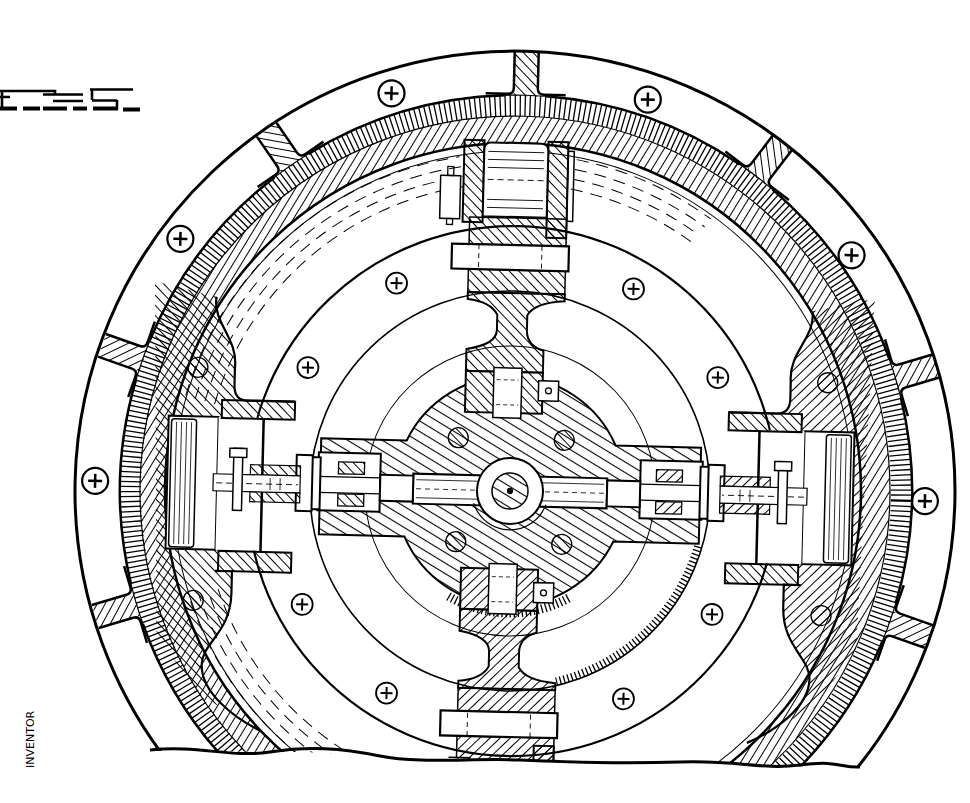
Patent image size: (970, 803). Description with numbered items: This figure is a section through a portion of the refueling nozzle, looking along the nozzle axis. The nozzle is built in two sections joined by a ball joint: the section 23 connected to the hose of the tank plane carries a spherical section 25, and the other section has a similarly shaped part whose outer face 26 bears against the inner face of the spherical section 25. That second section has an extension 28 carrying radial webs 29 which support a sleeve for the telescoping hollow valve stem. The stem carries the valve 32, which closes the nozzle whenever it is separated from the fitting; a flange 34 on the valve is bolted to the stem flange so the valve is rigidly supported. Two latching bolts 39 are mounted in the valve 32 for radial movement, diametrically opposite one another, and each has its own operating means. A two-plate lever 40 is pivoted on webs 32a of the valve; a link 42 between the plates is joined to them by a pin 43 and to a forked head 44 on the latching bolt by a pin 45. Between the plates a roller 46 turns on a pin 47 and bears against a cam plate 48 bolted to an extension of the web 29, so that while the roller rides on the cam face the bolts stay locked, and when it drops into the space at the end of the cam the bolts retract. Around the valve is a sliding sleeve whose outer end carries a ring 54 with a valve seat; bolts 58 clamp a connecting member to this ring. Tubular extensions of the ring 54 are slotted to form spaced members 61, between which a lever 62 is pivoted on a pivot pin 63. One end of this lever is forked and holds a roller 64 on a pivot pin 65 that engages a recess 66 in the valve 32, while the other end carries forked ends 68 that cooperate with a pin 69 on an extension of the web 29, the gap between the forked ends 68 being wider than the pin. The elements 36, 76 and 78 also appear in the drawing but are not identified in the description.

The nozzle section 23 is at (302, 101).
The spherical section 25 is at (684, 148).
The outer face 26 is at (773, 198).
The extension 28 is at (715, 203).
The radial webs 29 is at (475, 141).
The valve 32 is at (658, 345).
The webs 32a is at (322, 440).
The flange 34 is at (598, 402).
The hub 36 is at (513, 457).
The latching bolts 39 is at (575, 478).
The lever 40 is at (270, 474).
The link 42 is at (357, 526).
The pin 43 is at (296, 526).
The forked head 44 is at (383, 517).
The pin 45 is at (359, 462).
The roller 46 is at (251, 511).
The pin 47 is at (238, 458).
The cam plate 48 is at (193, 453).
The ring 54 is at (352, 279).
The bolts 58 is at (384, 294).
The spaced members 61 is at (463, 287).
The lever 62 is at (501, 326).
The pivot pin 63 is at (446, 259).
The roller 64 is at (524, 367).
The pivot pin 65 is at (557, 384).
The recess 66 is at (459, 405).
The forked ends 68 is at (548, 211).
The pin 69 is at (433, 202).
The bore 76 is at (505, 472).
The hub shoulder 78 is at (522, 462).